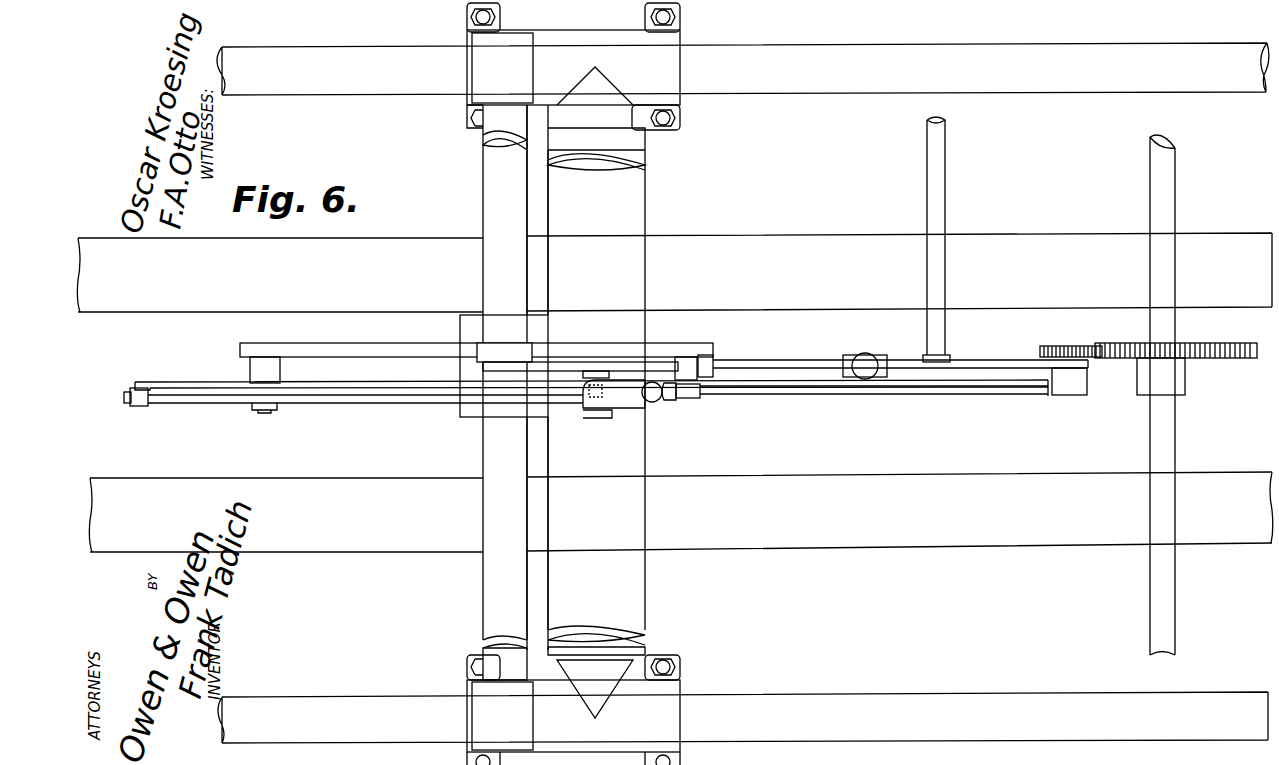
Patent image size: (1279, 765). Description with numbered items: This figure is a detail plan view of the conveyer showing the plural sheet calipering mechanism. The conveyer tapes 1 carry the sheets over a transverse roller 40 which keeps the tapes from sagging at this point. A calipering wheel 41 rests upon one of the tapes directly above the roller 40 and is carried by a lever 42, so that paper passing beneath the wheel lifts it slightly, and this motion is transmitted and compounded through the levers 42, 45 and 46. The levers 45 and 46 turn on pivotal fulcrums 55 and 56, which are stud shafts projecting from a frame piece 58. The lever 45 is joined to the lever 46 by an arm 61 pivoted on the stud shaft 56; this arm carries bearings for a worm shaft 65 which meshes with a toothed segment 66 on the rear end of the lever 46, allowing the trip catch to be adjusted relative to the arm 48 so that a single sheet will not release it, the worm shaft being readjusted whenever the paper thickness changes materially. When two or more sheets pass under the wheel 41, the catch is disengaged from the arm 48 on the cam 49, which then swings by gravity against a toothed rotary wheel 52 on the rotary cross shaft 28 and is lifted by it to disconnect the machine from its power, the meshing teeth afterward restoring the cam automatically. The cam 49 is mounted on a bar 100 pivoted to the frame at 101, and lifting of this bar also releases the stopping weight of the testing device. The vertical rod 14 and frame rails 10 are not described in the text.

The tapes 1 is at (674, 392).
The frame rail 10 is at (743, 393).
The vertical rod 14 is at (940, 180).
The rotary cross shaft 28 is at (1156, 585).
The transverse roller 40 is at (573, 384).
The calipering wheel 41 is at (628, 410).
The lever 42 is at (380, 384).
The lever 45 is at (312, 398).
The lever 46 is at (812, 394).
The arm 48 is at (1050, 394).
The cam 49 is at (1078, 348).
The rotary wheel 52 is at (1206, 358).
The pivotal fulcrum 55 is at (266, 420).
The pivotal fulcrum 56 is at (702, 398).
The frame piece 58 is at (450, 352).
The arm 61 is at (596, 400).
The worm shaft 65 is at (653, 403).
The toothed segment 66 is at (672, 402).
The bar 100 is at (830, 362).
The pivot 101 is at (577, 360).